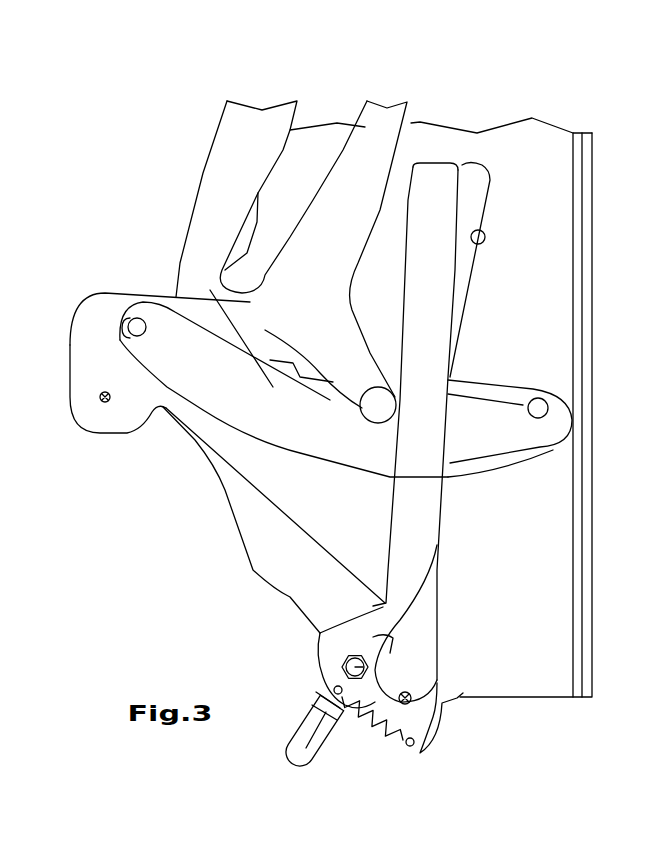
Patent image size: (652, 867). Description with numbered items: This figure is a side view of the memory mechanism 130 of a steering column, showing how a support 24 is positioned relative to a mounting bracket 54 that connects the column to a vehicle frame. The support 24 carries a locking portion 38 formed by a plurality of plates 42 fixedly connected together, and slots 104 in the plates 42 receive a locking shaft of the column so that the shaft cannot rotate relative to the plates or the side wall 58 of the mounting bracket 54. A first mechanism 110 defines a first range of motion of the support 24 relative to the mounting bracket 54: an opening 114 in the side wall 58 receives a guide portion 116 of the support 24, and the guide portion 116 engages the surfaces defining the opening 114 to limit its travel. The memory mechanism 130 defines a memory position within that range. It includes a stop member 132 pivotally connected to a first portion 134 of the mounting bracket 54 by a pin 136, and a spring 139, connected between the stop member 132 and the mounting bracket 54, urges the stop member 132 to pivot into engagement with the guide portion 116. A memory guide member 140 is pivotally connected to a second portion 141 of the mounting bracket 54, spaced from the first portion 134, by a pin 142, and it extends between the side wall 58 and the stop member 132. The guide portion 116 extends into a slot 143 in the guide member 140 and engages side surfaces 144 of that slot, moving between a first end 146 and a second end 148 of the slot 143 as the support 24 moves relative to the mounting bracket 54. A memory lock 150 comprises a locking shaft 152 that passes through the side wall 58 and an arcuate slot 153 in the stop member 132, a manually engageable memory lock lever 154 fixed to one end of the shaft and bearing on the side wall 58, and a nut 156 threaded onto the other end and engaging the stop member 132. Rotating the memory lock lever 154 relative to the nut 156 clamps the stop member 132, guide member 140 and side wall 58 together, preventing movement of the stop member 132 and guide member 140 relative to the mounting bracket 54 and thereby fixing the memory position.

The support 24 is at (200, 170).
The locking portion 38 is at (212, 218).
The plates 42 is at (247, 130).
The mounting bracket 54 is at (487, 683).
The side wall 58 is at (530, 667).
The slots 104 is at (348, 140).
The first mechanism 110 is at (333, 348).
The opening 114 is at (482, 243).
The guide portion 116 is at (378, 405).
The memory mechanism 130 is at (228, 606).
The stop member 132 is at (430, 325).
The first portion 134 is at (445, 700).
The pin 136 is at (409, 694).
The spring 139 is at (398, 748).
The memory guide member 140 is at (110, 367).
The second portion 141 is at (150, 422).
The pin 142 is at (100, 398).
The slot 143 is at (315, 480).
The side surfaces 144 is at (248, 328).
The first end 146 is at (122, 330).
The second end 148 is at (540, 397).
The memory lock 150 is at (283, 648).
The locking shaft 152 is at (342, 668).
The arcuate slot 153 is at (400, 617).
The memory lock lever 154 is at (322, 737).
The nut 156 is at (350, 655).